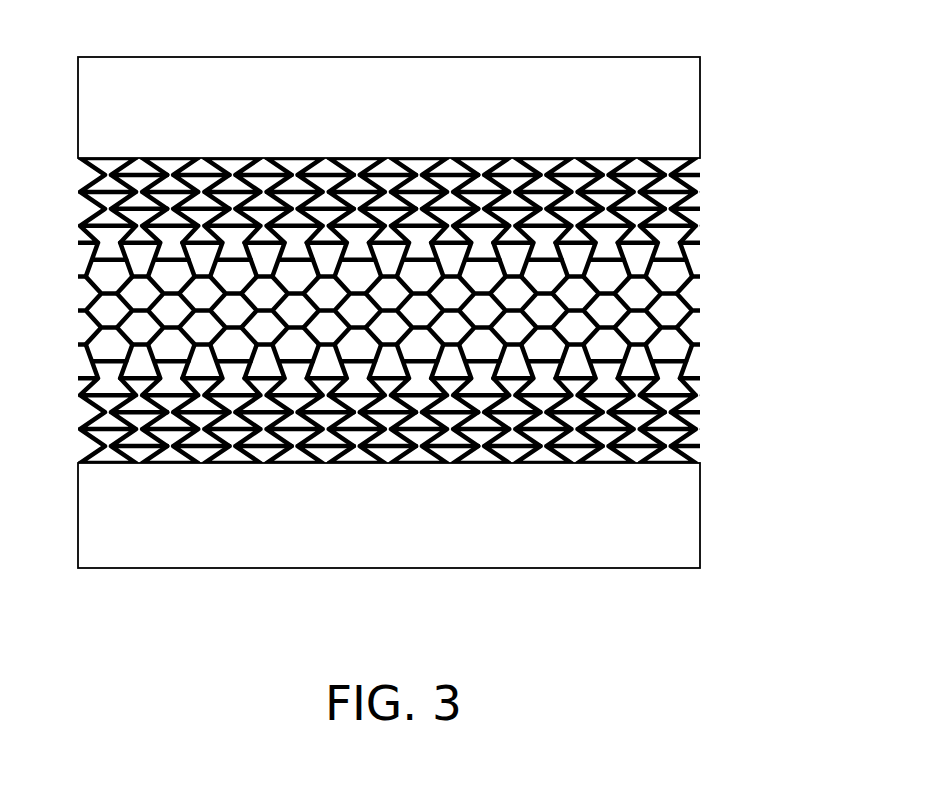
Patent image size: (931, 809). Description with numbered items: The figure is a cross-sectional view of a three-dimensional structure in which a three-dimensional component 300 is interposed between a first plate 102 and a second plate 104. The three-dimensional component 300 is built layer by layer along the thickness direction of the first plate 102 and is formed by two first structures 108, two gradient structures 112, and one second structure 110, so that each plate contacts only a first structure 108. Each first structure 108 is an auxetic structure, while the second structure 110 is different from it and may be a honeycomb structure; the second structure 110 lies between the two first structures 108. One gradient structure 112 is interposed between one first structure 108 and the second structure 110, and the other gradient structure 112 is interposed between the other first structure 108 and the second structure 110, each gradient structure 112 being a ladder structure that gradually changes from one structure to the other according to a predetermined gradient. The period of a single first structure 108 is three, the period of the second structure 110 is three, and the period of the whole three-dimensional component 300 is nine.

The first plate 102 is at (670, 108).
The second plate 104 is at (670, 522).
The first structure 108 is at (717, 158).
The second structure 110 is at (717, 263).
The gradient structure 112 is at (76, 250).
The three-dimensional component 300 is at (436, 310).